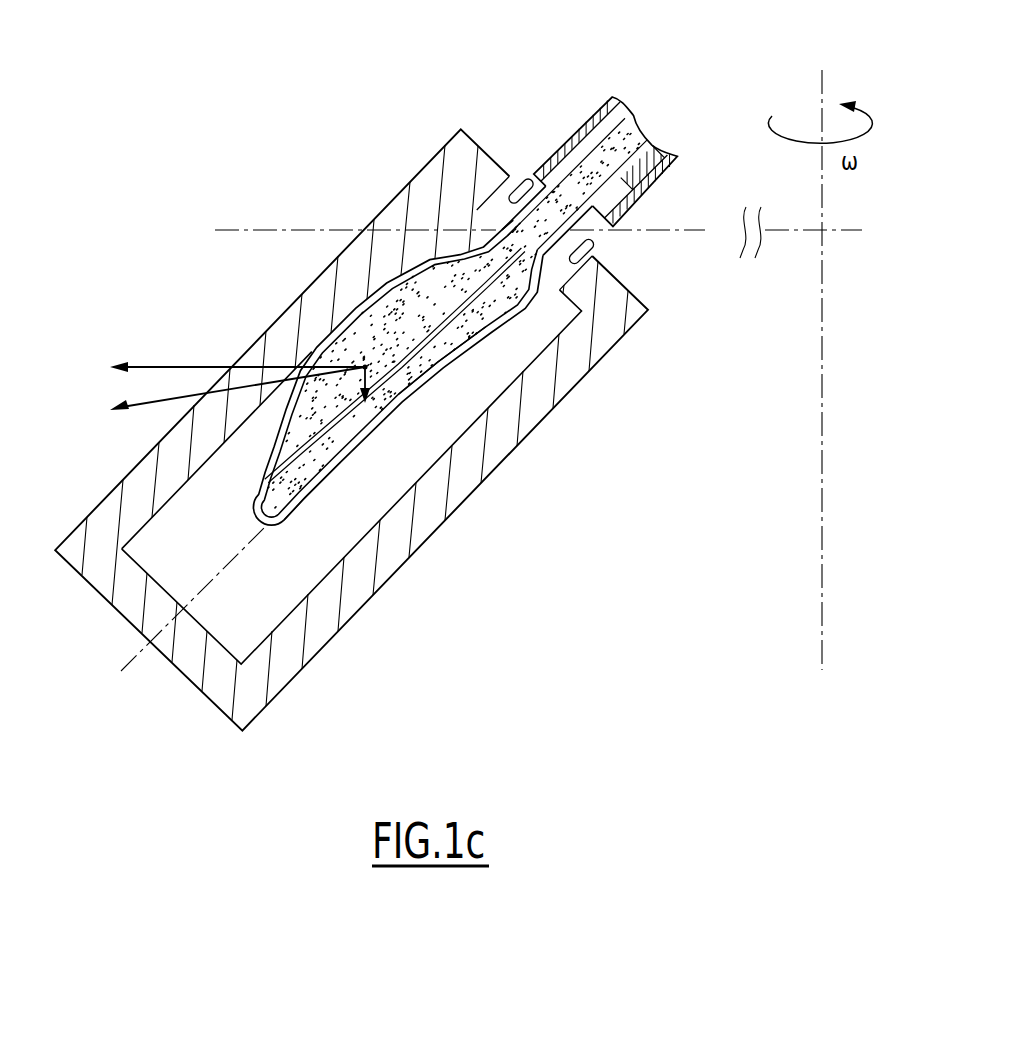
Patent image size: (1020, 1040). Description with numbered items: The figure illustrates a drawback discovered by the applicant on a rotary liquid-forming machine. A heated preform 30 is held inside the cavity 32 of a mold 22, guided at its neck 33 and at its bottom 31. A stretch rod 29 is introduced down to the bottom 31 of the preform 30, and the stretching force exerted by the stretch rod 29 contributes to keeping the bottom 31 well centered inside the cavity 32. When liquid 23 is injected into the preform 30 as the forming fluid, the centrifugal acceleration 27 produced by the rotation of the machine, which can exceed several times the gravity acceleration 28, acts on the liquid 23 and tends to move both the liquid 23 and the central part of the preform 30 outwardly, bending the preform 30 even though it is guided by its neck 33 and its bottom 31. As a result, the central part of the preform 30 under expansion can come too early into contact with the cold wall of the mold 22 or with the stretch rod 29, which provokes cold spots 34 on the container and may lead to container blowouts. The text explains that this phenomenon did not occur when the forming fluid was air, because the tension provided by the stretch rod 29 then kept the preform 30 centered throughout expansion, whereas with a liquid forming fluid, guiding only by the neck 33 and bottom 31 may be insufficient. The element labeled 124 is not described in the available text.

The mold 22 is at (472, 449).
The liquid 23 is at (400, 297).
The centrifugal acceleration 27 is at (192, 366).
The gravity acceleration 28 is at (397, 362).
The stretch rod 29 is at (528, 325).
The heated preform 30 is at (329, 514).
The bottom 31 is at (264, 535).
The cavity 32 is at (425, 372).
The neck 33 is at (608, 250).
The cold spots 34 is at (332, 324).
The connector 124 is at (571, 129).